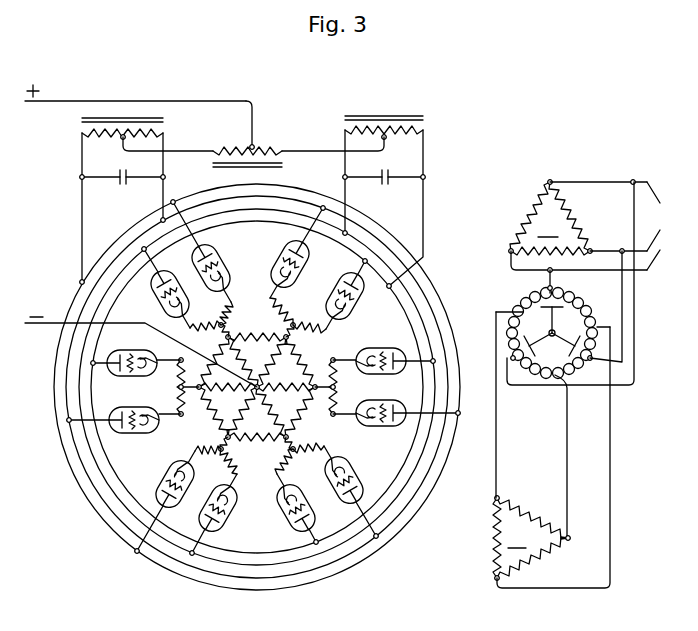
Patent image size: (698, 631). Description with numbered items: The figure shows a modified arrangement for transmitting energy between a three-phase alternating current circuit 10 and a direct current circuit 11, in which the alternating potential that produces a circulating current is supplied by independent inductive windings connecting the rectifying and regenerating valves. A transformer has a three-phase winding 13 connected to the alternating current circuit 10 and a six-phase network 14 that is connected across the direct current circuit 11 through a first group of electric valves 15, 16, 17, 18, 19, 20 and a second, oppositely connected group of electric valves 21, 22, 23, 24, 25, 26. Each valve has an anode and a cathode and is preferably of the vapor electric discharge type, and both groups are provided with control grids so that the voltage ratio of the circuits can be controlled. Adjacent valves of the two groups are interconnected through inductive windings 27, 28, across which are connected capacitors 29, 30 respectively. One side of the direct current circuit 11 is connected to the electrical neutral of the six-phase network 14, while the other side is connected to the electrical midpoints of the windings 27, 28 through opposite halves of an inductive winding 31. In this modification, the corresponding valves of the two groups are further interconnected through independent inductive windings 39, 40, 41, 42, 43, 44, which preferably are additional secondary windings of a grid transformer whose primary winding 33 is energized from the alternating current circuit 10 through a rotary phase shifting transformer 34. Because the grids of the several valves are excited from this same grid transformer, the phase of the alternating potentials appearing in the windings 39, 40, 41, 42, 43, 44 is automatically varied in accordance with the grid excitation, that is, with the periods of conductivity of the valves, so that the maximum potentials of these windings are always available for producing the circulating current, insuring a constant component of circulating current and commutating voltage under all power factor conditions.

The three-phase alternating current circuit 10 is at (659, 226).
The direct current circuit 11 is at (75, 101).
The three-phase winding 13 is at (578, 226).
The six-phase network 14 is at (300, 347).
The electric valve 15 is at (275, 250).
The electric valve 16 is at (388, 430).
The electric valve 17 is at (386, 478).
The electric valve 18 is at (152, 485).
The electric valve 19 is at (133, 440).
The electric valve 20 is at (226, 262).
The electric valve 21 is at (360, 302).
The electric valve 22 is at (392, 348).
The electric valve 23 is at (283, 540).
The electric valve 24 is at (236, 537).
The electric valve 25 is at (133, 348).
The electric valve 26 is at (152, 300).
The inductive winding 27 is at (80, 128).
The inductive winding 28 is at (423, 130).
The capacitor 29 is at (124, 184).
The capacitor 30 is at (386, 184).
The inductive winding 31 is at (262, 147).
The primary winding 33 is at (551, 450).
The rotary phase shifting transformer 34 is at (585, 365).
The inductive winding 39 is at (322, 320).
The inductive winding 40 is at (333, 418).
The inductive winding 41 is at (295, 464).
The inductive winding 42 is at (236, 472).
The inductive winding 43 is at (170, 388).
The inductive winding 44 is at (225, 320).